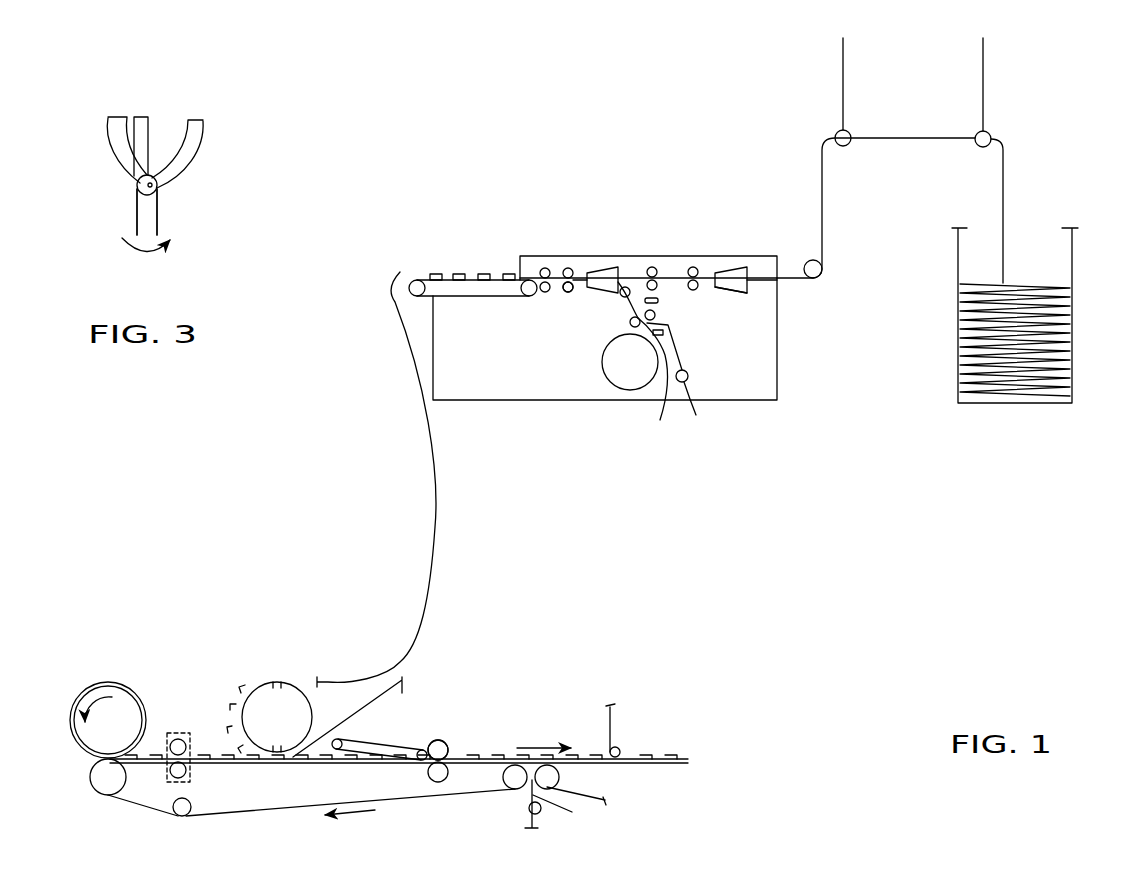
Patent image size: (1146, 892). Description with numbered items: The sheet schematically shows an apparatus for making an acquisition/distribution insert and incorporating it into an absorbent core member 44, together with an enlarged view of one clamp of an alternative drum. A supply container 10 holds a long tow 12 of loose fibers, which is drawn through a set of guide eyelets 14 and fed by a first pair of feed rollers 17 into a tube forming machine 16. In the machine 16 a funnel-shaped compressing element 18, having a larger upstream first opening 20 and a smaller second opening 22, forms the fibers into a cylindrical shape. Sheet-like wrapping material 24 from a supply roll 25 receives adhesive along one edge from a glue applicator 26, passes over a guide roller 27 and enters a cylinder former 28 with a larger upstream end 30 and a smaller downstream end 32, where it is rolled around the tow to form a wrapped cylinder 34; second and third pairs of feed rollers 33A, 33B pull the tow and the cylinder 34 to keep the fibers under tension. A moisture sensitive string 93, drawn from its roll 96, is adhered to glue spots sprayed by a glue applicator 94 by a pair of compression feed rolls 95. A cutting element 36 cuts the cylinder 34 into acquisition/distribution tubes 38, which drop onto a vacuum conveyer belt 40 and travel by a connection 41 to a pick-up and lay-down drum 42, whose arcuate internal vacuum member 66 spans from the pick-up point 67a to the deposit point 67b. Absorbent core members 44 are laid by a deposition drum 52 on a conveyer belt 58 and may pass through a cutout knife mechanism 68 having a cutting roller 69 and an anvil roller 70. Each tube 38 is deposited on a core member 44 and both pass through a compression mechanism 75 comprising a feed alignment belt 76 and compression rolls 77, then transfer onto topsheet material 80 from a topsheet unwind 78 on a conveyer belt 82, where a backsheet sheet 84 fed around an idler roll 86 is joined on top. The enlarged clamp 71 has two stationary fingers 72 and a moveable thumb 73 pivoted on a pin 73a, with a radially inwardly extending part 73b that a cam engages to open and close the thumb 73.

In FIG. 1, the supply container 10 is at (1072, 323).
In FIG. 1, the tow 12 is at (1003, 183).
In FIG. 1, the guide eyelets 14 is at (838, 133).
In FIG. 1, the tube forming machine 16 is at (764, 409).
In FIG. 1, the first pair of feed rollers 17 is at (695, 268).
In FIG. 1, the compressing element 18 is at (732, 291).
In FIG. 1, the first opening 20 is at (747, 270).
In FIG. 1, the second opening 22 is at (716, 273).
In FIG. 1, the wrapping material 24 is at (670, 365).
In FIG. 1, the supply roll 25 is at (612, 388).
In FIG. 1, the glue applicator 26 is at (660, 302).
In FIG. 1, the guide roller 27 is at (620, 296).
In FIG. 1, the cylinder former 28 is at (598, 272).
In FIG. 1, the upstream end 30 is at (622, 276).
In FIG. 1, the downstream end 32 is at (580, 275).
In FIG. 1, the second pair of feed rollers 33A is at (655, 268).
In FIG. 1, the third pair of feed rollers 33B is at (565, 288).
In FIG. 1, the wrapped cylinder 34 is at (577, 284).
In FIG. 1, the cutting element 36 is at (545, 268).
In FIG. 1, the acquisition/distribution tubes 38 is at (457, 272).
In FIG. 1, the vacuum conveyer belt 40 is at (413, 280).
In FIG. 1, the connection 41 is at (435, 528).
In FIG. 1, the pick-up and lay-down drum 42 is at (284, 704).
In FIG. 1, the absorbent core member 44 is at (133, 760).
In FIG. 1, the deposition drum 52 is at (100, 685).
In FIG. 1, the conveyer belt 58 is at (260, 810).
In FIG. 1, the arcuate internal vacuum member 66 is at (248, 733).
In FIG. 1, the pick-up point 67a is at (277, 683).
In FIG. 1, the deposit point 67b is at (278, 757).
In FIG. 1, the cutout knife mechanism 68 is at (190, 730).
In FIG. 1, the cutting roller 69 is at (177, 740).
In FIG. 1, the anvil roller 70 is at (185, 780).
In FIG. 3, the clamp 71 is at (126, 211).
In FIG. 3, the stationary fingers 72 is at (118, 122).
In FIG. 3, the moveable thumb 73 is at (195, 127).
In FIG. 3, the pin 73a is at (138, 188).
In FIG. 3, the radially inwardly extending part 73b is at (157, 220).
In FIG. 1, the compression or calendering mechanism 75 is at (427, 734).
In FIG. 1, the feed alignment belt 76 is at (378, 747).
In FIG. 1, the compression rolls 77 is at (447, 748).
In FIG. 1, the topsheet unwind 78 is at (537, 815).
In FIG. 1, the topsheet material 80 is at (570, 814).
In FIG. 1, the conveyer belt 82 is at (587, 795).
In FIG. 1, the backsheet material sheet 84 is at (625, 758).
In FIG. 1, the idler roll 86 is at (618, 748).
In FIG. 1, the moisture sensitive string 93 is at (685, 358).
In FIG. 1, the glue applicator 94 is at (665, 333).
In FIG. 1, the compression feed rolls 95 is at (630, 325).
In FIG. 1, the string roll 96 is at (684, 384).